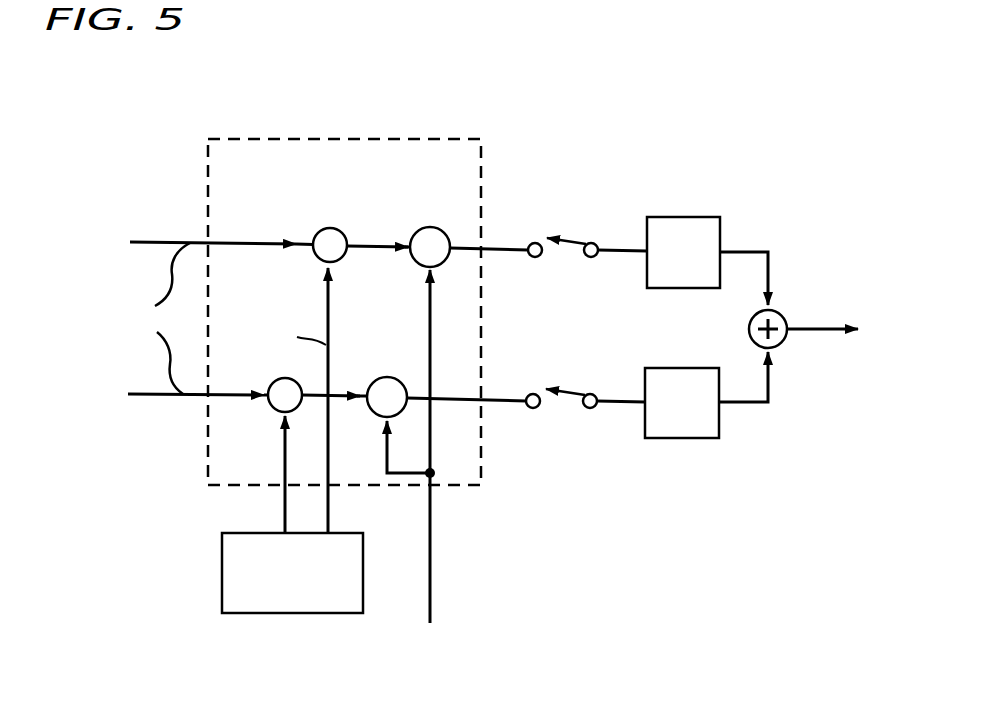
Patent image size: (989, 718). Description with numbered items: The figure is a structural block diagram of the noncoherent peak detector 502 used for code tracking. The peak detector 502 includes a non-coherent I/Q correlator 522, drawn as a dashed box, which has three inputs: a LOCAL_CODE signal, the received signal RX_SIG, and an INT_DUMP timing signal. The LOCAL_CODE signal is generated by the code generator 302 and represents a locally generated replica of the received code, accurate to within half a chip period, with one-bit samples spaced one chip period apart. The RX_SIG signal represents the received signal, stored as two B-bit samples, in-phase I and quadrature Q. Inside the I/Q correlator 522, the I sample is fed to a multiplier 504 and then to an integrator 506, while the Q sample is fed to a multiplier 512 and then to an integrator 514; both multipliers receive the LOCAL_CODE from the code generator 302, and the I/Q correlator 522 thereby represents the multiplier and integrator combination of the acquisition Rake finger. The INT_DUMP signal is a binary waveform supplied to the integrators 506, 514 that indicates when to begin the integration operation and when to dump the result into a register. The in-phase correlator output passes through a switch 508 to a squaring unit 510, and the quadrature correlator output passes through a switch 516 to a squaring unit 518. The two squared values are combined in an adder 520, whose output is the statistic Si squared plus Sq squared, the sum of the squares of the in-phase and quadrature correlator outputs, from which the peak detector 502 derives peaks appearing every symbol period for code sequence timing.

The noncoherent peak detector 502 is at (186, 104).
The non-coherent I/Q correlator 522 is at (361, 139).
The I-channel multiplier 504 is at (327, 227).
The I-channel integrator (summer) 506 is at (428, 226).
The I-channel switch 508 is at (559, 237).
The I-channel squaring unit 510 is at (680, 217).
The Q-channel multiplier 512 is at (269, 410).
The Q-channel integrator (summer) 514 is at (385, 377).
The Q-channel switch 516 is at (557, 389).
The Q-channel squaring unit 518 is at (679, 368).
The adder 520 is at (783, 314).
The code generator 302 is at (222, 553).